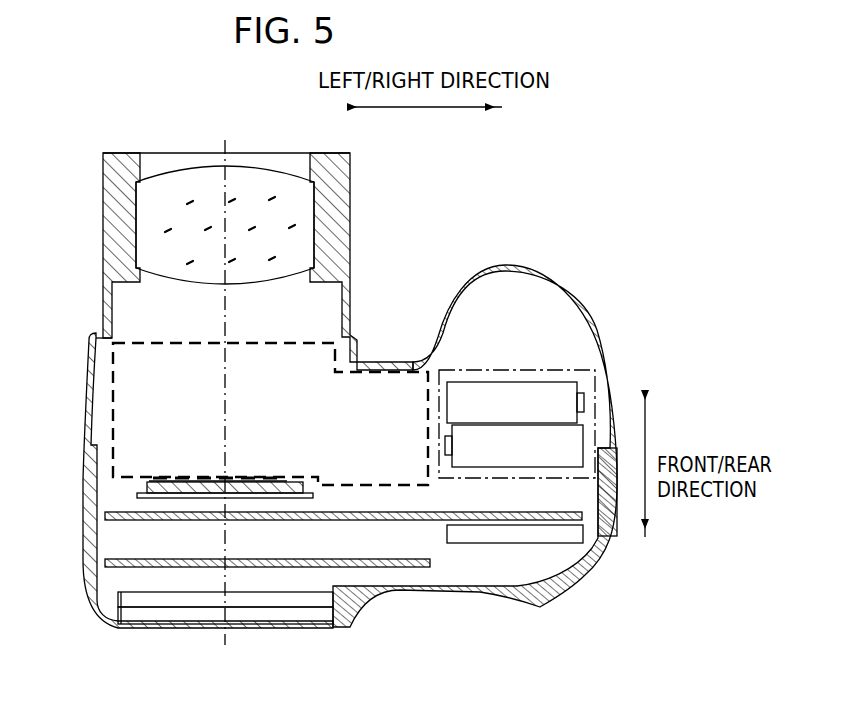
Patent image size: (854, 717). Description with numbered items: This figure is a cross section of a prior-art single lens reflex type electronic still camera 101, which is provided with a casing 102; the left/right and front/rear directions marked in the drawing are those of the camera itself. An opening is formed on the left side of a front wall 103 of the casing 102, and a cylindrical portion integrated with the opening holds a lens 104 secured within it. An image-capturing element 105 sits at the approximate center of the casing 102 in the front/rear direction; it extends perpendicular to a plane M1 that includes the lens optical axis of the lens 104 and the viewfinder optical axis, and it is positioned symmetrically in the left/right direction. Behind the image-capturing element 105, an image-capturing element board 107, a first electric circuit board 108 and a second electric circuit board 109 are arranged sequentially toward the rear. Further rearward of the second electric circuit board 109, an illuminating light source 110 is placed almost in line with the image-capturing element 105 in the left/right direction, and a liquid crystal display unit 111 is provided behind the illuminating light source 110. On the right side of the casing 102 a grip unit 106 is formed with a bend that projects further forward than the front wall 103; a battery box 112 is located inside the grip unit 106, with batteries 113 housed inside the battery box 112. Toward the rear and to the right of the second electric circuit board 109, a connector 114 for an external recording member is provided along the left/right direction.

The single lens reflex type electronic still camera 101 is at (512, 193).
The casing 102 is at (593, 283).
The front wall 103 is at (380, 363).
The lens 104 is at (208, 198).
The image-capturing element 105 is at (167, 477).
The grip unit 106 is at (588, 335).
The image-capturing element board 107 is at (280, 478).
The first electric circuit board 108 is at (388, 522).
The second electric circuit board 109 is at (343, 567).
The illuminating light source 110 is at (148, 603).
The liquid crystal display unit 111 is at (253, 615).
The battery box 112 is at (523, 368).
The batteries 113 is at (552, 403).
The connector for an external recording member 114 is at (513, 535).
The plane M1 is at (225, 417).